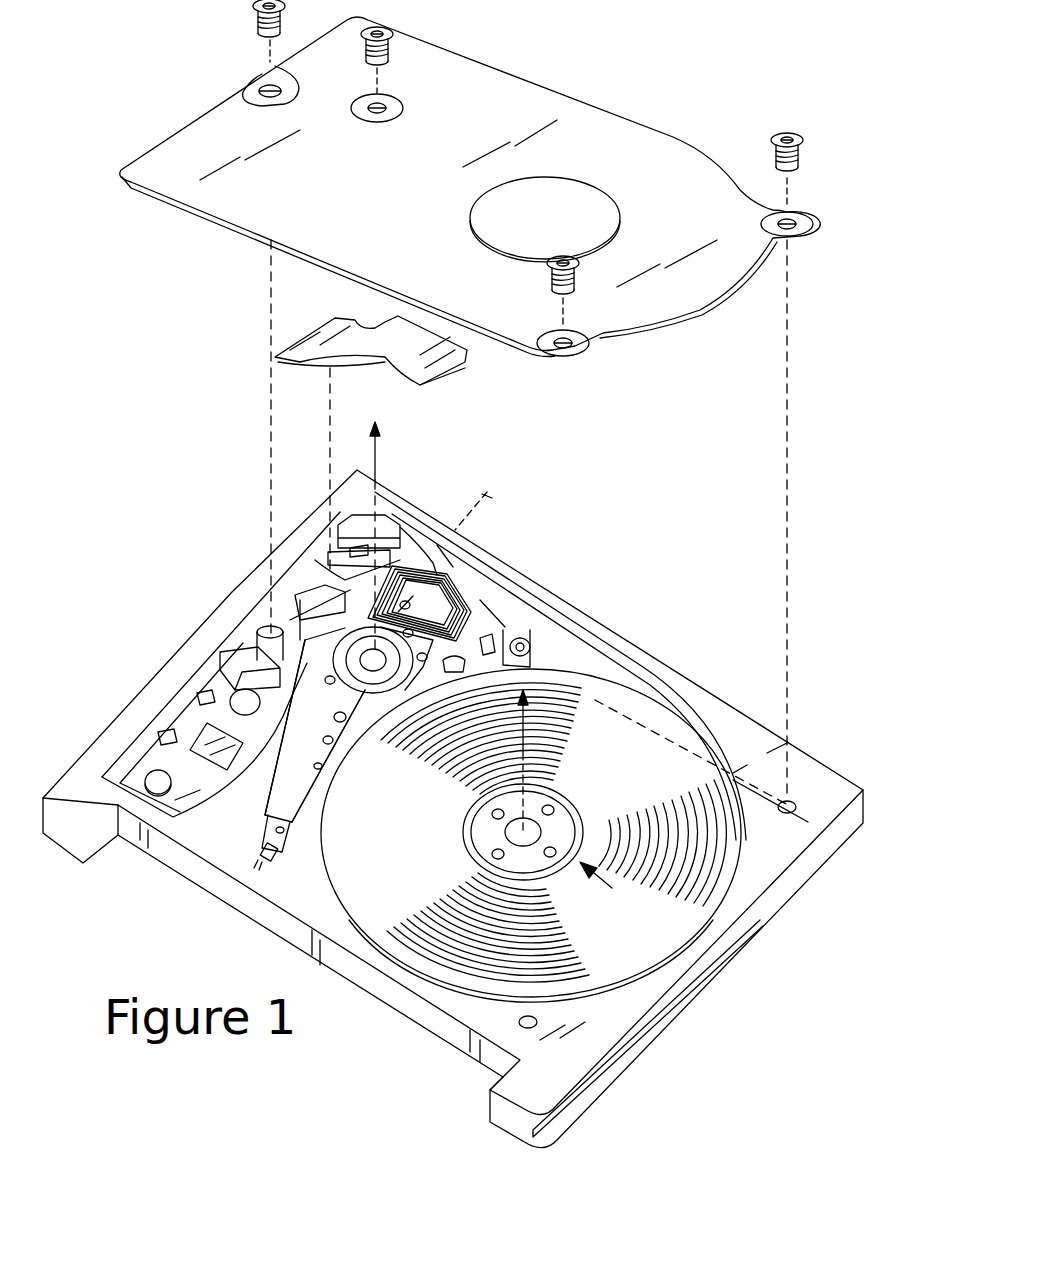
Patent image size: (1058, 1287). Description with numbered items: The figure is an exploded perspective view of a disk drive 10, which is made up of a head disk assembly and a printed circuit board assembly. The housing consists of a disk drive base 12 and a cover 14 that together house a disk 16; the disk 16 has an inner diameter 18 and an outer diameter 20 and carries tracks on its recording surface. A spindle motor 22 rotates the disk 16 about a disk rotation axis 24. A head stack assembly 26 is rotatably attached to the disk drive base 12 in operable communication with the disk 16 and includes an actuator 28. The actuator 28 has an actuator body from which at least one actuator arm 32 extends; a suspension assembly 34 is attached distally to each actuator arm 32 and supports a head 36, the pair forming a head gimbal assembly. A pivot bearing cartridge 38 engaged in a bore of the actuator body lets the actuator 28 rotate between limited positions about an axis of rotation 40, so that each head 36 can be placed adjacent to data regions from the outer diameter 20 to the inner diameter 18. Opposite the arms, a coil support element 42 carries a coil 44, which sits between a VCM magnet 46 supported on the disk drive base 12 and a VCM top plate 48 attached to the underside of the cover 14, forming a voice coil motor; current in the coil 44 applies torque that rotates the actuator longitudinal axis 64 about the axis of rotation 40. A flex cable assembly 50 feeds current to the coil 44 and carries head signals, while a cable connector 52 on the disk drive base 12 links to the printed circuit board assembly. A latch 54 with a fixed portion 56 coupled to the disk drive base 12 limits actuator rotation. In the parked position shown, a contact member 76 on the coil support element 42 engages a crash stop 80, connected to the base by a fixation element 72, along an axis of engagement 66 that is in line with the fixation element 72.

The disk drive 10 is at (101, 104).
The disk drive base 12 is at (143, 703).
The cover 14 is at (390, 197).
The disk 16 is at (434, 837).
The inner diameter 18 is at (605, 883).
The outer diameter 20 is at (640, 962).
The spindle motor 22 is at (556, 818).
The disk rotation axis 24 is at (534, 745).
The head stack assembly 26 is at (280, 607).
The actuator 28 is at (337, 597).
The actuator arm 32 is at (340, 740).
The suspension assembly 34 is at (300, 818).
The head 36 is at (254, 848).
The pivot bearing cartridge 38 is at (273, 630).
The axis of rotation 40 is at (375, 455).
The coil support element 42 is at (482, 612).
The coil 44 is at (432, 588).
The VCM magnet 46 is at (310, 600).
The VCM top plate 48 is at (446, 366).
The flex cable assembly 50 is at (237, 657).
The cable connector 52 is at (147, 760).
The latch 54 is at (350, 570).
The fixed portion 56 is at (350, 540).
The actuator longitudinal axis 64 is at (491, 497).
The axis of engagement 66 is at (848, 849).
The fixation element 72 is at (528, 646).
The contact member 76 is at (520, 625).
The crash stop 80 is at (510, 640).